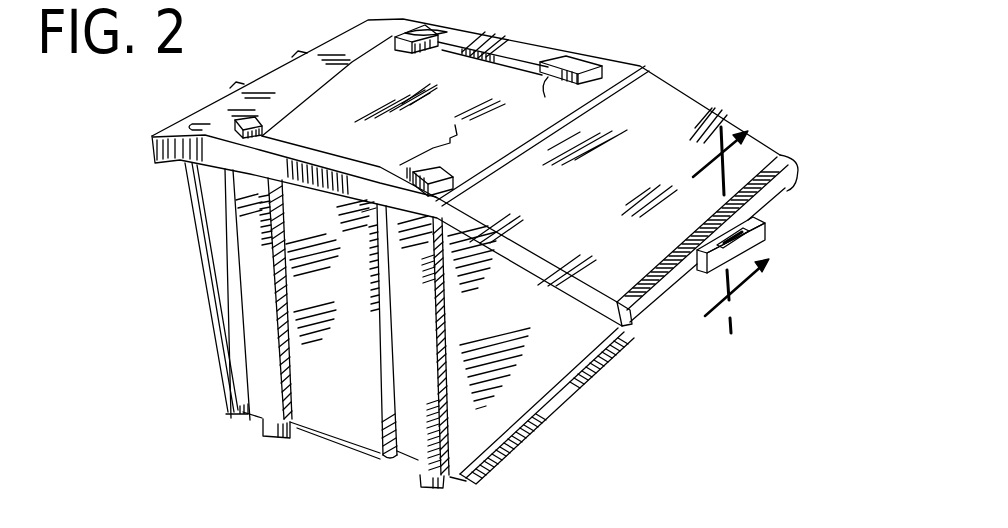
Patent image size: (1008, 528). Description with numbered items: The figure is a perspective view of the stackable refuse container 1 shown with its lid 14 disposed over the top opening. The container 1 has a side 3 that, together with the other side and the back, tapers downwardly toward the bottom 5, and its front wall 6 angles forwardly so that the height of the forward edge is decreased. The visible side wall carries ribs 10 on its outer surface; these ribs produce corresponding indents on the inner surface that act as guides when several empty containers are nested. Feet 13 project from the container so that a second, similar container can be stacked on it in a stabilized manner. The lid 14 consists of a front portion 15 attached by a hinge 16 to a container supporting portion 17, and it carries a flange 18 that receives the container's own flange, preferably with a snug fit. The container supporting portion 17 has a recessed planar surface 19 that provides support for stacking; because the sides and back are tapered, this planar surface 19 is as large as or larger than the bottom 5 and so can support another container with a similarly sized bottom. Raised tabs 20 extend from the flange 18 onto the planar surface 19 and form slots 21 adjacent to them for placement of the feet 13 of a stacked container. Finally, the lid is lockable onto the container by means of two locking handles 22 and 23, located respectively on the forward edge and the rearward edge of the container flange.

The stackable refuse container 1 is at (202, 366).
The side 3 is at (328, 411).
The bottom 5 is at (718, 237).
The front wall 6 is at (613, 365).
The ribs 10 is at (248, 211).
The feet 13 is at (266, 434).
The lid 14 is at (678, 40).
The front portion 15 is at (608, 208).
The hinge 16 is at (643, 68).
The container supporting portion 17 is at (512, 81).
The flange 18 is at (548, 57).
The recessed planar surface 19 is at (460, 77).
The raised tabs 20 is at (238, 120).
The slots 21 is at (262, 132).
The locking handle 22 is at (770, 222).
The locking handle 23 is at (263, 70).